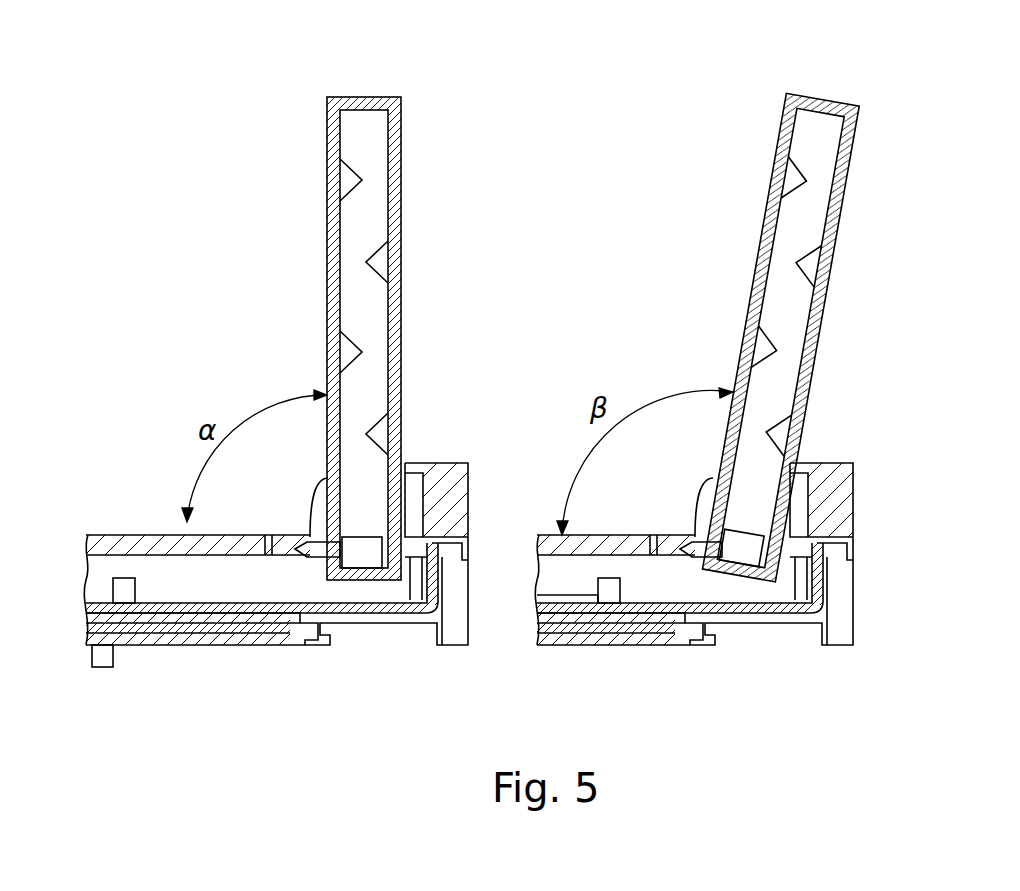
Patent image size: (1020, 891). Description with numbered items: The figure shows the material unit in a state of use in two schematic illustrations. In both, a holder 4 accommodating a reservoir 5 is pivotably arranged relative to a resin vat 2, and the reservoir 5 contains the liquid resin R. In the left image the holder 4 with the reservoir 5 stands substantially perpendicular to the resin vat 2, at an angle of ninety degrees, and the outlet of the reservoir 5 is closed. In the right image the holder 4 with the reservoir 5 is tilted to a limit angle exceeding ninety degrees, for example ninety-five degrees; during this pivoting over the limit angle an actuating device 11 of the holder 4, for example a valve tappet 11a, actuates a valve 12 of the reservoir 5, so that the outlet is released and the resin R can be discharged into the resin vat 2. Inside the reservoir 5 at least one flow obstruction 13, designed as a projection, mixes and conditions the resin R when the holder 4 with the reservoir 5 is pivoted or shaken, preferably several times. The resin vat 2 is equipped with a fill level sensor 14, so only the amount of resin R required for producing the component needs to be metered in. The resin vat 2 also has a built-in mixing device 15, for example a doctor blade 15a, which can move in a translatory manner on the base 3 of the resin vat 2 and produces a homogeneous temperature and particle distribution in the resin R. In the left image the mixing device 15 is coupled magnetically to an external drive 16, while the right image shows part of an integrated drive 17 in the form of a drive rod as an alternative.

The resin vat 2 is at (160, 578).
The base 3 is at (248, 608).
The holder 4 is at (398, 178).
The reservoir 5 is at (362, 132).
The actuating device 11 is at (472, 511).
The valve tappet 11a is at (318, 545).
The valve 12 is at (347, 560).
The flow obstruction 13 is at (345, 179).
The fill level sensor 14 is at (414, 592).
The mixing device 15 is at (422, 650).
The doctor blade 15a is at (122, 595).
The external drive 16 is at (101, 653).
The drive 17 is at (585, 600).
The resin R is at (365, 232).